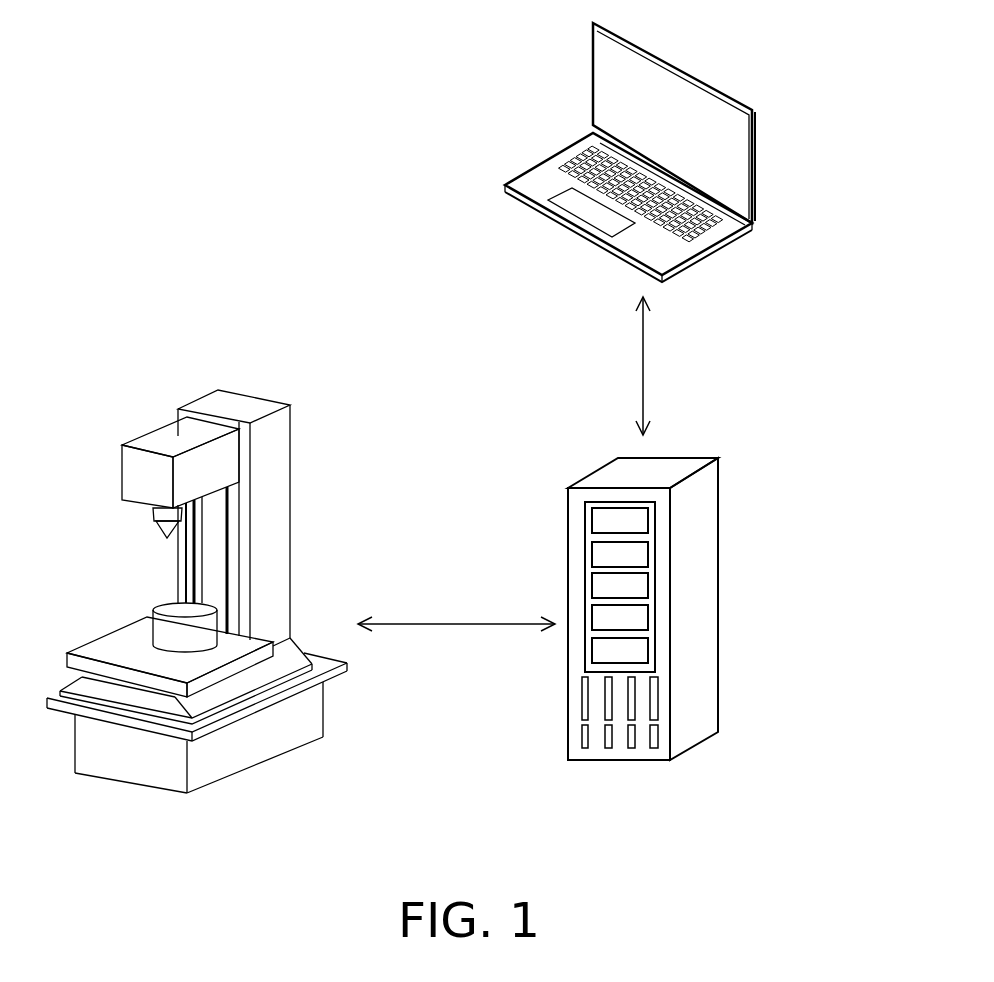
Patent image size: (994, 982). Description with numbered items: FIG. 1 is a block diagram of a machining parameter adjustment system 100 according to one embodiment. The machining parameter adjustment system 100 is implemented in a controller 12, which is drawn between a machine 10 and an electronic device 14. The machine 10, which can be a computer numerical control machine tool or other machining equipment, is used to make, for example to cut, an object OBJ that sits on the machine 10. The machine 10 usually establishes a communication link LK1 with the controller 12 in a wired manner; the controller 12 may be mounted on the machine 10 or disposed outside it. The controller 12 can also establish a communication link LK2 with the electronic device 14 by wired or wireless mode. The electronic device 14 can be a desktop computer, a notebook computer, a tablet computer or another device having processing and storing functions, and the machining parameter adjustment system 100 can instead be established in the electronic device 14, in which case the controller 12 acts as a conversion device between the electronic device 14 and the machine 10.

The machine 10 is at (280, 500).
The object OBJ is at (168, 607).
The controller 12 is at (708, 593).
The electronic device 14 is at (753, 163).
The machining parameter adjustment system 100 is at (704, 391).
The communication link LK1 is at (456, 607).
The communication link LK2 is at (674, 366).